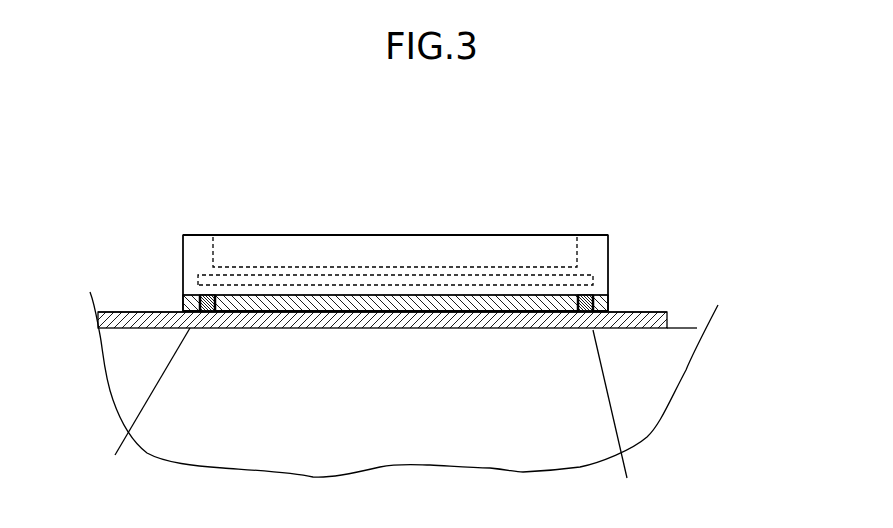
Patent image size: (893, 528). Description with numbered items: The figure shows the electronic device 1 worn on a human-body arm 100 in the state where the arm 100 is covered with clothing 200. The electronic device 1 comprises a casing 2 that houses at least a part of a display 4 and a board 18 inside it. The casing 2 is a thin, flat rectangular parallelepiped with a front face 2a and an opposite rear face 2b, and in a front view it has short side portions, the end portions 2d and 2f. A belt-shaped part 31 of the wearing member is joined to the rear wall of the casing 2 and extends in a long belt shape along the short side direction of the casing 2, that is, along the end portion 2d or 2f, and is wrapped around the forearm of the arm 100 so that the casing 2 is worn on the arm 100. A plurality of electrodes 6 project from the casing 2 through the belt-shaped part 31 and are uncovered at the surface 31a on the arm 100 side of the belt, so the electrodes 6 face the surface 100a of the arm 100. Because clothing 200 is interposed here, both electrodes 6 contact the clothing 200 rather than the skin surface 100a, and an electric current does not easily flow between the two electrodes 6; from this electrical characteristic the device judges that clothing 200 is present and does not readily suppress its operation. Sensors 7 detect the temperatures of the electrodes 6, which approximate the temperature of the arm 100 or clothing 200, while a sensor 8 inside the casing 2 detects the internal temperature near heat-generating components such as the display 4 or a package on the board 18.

The electronic device 1 is at (614, 146).
The casing 2 is at (607, 236).
The face 2a is at (193, 233).
The face 2b is at (487, 330).
The end portion 2d is at (610, 258).
The end portion 2f is at (183, 250).
The display 4 is at (463, 235).
The electrodes 6 is at (370, 416).
The sensors 7 is at (208, 296).
The sensor 8 is at (397, 272).
The board 18 is at (253, 267).
The belt-shaped part 31 is at (610, 308).
The surface 31a is at (270, 328).
The arm 100 is at (655, 392).
The surface 100a is at (694, 328).
The clothing 200 is at (112, 312).